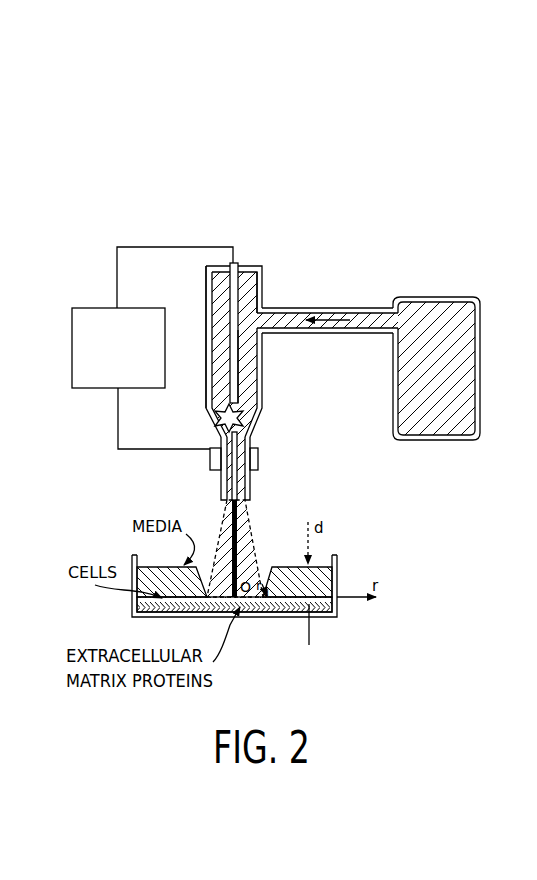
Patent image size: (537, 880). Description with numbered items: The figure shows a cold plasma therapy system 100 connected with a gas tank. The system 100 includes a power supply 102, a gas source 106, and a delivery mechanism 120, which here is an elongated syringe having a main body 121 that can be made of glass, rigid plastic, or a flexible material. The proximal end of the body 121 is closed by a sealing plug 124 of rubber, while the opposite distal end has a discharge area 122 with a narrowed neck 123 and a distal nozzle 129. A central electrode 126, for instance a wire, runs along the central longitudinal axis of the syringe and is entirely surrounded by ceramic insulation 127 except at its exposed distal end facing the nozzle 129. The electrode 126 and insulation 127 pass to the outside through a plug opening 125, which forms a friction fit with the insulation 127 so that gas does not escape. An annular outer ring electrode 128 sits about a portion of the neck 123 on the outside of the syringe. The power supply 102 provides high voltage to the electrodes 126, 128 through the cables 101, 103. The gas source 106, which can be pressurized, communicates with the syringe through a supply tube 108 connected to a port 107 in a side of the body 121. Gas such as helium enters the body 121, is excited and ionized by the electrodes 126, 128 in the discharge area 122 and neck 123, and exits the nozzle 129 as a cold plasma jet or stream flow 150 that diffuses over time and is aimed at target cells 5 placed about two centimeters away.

The cold plasma therapy system 100 is at (337, 177).
The cable 101 is at (162, 246).
The power supply 102 is at (97, 307).
The cable 103 is at (118, 448).
The gas source 106 is at (456, 297).
The port 107 is at (275, 308).
The supply tube 108 is at (355, 308).
The delivery mechanism 120 is at (201, 262).
The main body 121 is at (206, 309).
The discharge area 122 is at (223, 407).
The narrowed neck 123 is at (251, 492).
The sealing plug 124 is at (248, 270).
The plug opening 125 is at (237, 263).
The central electrode 126 is at (236, 348).
The insulation 127 is at (261, 284).
The annular outer ring electrode 128 is at (258, 461).
The nozzle 129 is at (251, 505).
The jet or stream flow 150 is at (242, 540).
The target cells 5 is at (340, 557).